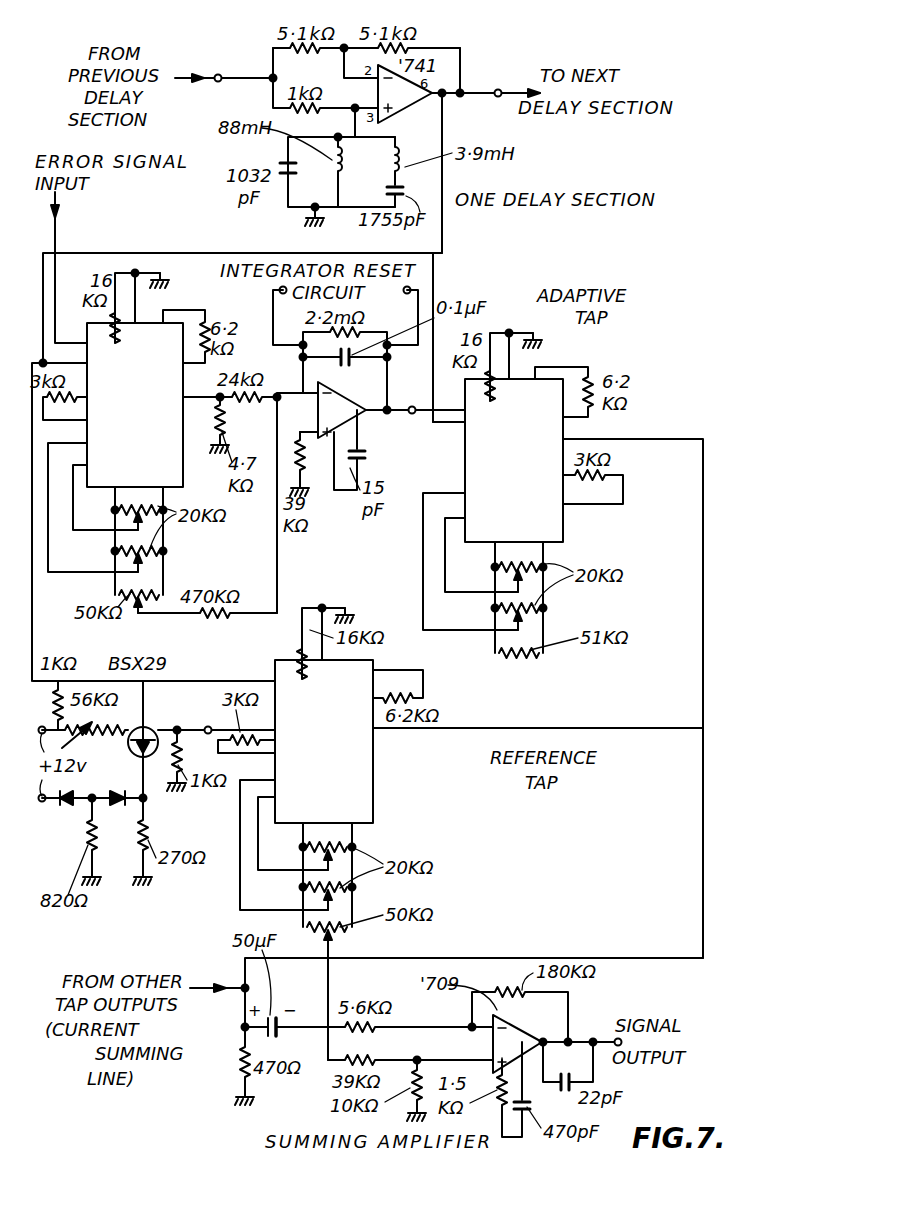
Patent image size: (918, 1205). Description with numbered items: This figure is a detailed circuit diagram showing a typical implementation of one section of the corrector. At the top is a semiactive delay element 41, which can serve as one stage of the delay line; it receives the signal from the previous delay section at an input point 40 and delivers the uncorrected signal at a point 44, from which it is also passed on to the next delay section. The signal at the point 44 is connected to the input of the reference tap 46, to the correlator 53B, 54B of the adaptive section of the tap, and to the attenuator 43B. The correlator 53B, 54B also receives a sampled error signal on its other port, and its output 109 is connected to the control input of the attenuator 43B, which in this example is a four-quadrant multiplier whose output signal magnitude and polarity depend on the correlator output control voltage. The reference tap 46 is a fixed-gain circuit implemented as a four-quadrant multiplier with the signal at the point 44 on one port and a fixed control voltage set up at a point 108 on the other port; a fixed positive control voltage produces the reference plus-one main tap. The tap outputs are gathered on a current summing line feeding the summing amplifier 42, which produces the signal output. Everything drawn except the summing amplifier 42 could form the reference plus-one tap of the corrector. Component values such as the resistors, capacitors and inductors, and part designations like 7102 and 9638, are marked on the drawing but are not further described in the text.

The delay section input terminal 40 is at (216, 73).
The semiactive delay element 41 is at (358, 28).
The point 44 is at (498, 88).
The correlator 53B is at (184, 478).
The correlator 54B is at (338, 424).
The output 109 is at (411, 406).
The attenuator 43B is at (565, 527).
The reference tap 46 is at (366, 781).
The point 108 is at (206, 722).
The summing amplifier 42 is at (524, 1036).
The zener diode 7102 is at (67, 806).
The diode 9638 is at (128, 802).